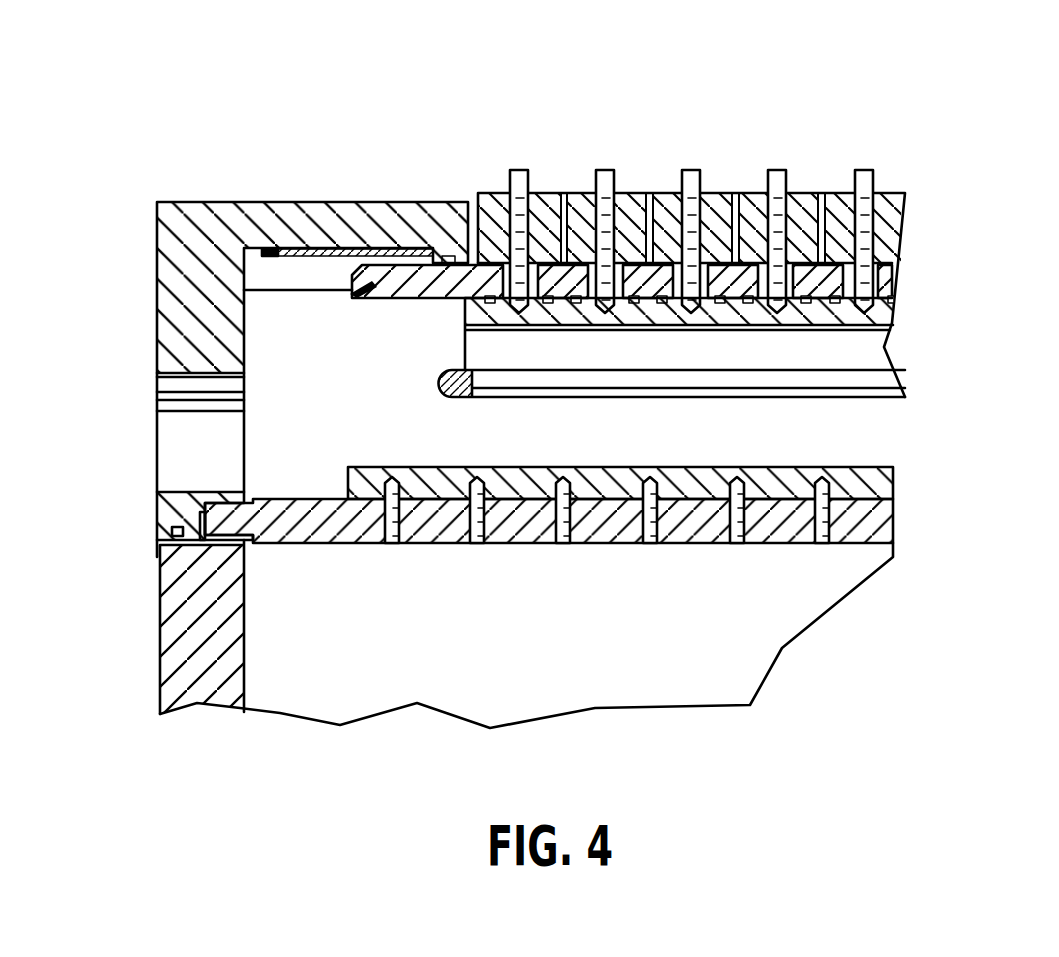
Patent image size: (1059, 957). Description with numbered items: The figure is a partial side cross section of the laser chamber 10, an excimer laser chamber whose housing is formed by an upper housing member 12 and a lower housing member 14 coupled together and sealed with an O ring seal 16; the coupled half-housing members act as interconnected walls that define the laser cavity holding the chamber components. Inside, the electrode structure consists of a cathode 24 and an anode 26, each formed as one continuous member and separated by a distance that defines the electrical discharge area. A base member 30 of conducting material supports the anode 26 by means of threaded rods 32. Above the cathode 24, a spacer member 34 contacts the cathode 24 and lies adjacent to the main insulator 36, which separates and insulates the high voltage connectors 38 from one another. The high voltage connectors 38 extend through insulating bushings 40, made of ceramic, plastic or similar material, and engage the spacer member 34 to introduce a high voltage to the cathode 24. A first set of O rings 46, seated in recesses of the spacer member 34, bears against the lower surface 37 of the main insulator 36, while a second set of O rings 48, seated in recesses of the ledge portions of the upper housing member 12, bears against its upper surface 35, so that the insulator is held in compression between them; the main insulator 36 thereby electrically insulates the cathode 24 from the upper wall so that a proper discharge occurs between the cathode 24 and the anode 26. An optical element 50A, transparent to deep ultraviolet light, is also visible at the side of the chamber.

The laser chamber 10 is at (742, 119).
The upper housing member 12 is at (194, 202).
The lower housing member 14 is at (155, 656).
The O ring seal 16 is at (183, 538).
The cathode 24 is at (529, 380).
The anode 26 is at (366, 467).
The base member 30 is at (602, 538).
The threaded rods 32 is at (392, 545).
The spacer member 34 is at (473, 310).
The upper surface 35 is at (373, 249).
The main insulator 36 is at (378, 283).
The lower surface 37 is at (414, 300).
The high voltage connectors 38 is at (521, 177).
The insulating bushings 40 is at (578, 195).
The first set of O rings 46 is at (626, 300).
The second set of O rings 48 is at (447, 256).
The optical element 50A is at (202, 438).